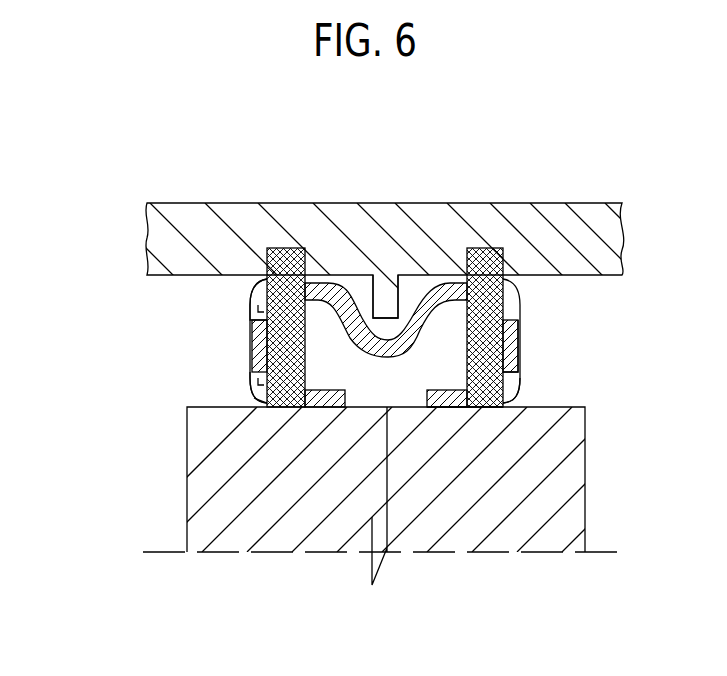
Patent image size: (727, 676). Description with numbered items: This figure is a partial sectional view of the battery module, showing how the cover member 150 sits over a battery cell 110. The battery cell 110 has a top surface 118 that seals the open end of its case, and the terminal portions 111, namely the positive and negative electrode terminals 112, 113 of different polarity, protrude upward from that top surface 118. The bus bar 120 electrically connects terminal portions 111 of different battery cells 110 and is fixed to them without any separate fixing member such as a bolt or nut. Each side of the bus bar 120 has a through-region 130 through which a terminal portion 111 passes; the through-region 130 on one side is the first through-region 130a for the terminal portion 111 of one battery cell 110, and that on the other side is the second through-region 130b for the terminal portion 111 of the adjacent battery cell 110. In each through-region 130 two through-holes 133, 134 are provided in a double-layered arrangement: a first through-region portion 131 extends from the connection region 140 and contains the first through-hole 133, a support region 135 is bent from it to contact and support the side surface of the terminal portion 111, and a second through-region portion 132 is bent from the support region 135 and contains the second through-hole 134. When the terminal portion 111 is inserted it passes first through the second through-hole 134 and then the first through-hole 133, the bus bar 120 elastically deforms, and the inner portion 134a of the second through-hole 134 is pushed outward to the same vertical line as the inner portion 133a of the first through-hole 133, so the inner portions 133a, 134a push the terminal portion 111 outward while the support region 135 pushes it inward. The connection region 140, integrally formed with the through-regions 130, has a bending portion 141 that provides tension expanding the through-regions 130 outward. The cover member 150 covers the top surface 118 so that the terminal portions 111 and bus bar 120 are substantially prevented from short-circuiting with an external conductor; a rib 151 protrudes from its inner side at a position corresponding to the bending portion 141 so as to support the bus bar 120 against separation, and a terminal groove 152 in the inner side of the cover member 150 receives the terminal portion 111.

The battery cell 110 is at (190, 492).
The terminal portion 111 is at (377, 248).
The positive electrode terminal 112 is at (287, 248).
The negative electrode terminal 113 is at (480, 269).
The top surface 118 is at (508, 420).
The bus bar 120 is at (401, 467).
The through-region 130 is at (410, 527).
The first through-region 130a is at (319, 412).
The second through-region 130b is at (436, 412).
The first through-region portion 131 is at (483, 407).
The second through-region portion 132 is at (448, 412).
The first through-hole 133 is at (397, 441).
The inner portion of the first through-hole 133a is at (268, 280).
The second through-hole 134 is at (265, 392).
The inner portion of the second through-hole 134a is at (266, 407).
The support region 135 is at (530, 364).
The connection region 140 is at (346, 266).
The bending portion 141 is at (388, 360).
The cover member 150 is at (142, 245).
The rib 151 is at (253, 357).
The terminal groove 152 is at (268, 250).